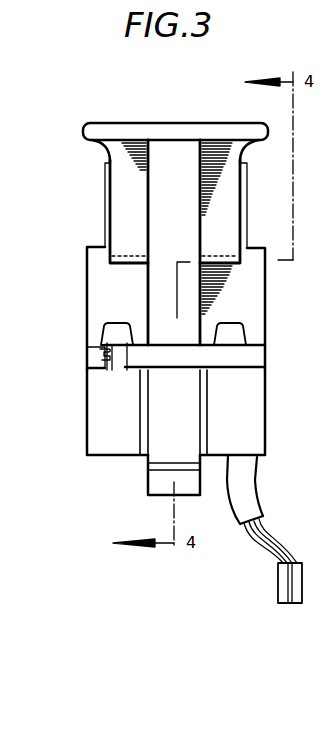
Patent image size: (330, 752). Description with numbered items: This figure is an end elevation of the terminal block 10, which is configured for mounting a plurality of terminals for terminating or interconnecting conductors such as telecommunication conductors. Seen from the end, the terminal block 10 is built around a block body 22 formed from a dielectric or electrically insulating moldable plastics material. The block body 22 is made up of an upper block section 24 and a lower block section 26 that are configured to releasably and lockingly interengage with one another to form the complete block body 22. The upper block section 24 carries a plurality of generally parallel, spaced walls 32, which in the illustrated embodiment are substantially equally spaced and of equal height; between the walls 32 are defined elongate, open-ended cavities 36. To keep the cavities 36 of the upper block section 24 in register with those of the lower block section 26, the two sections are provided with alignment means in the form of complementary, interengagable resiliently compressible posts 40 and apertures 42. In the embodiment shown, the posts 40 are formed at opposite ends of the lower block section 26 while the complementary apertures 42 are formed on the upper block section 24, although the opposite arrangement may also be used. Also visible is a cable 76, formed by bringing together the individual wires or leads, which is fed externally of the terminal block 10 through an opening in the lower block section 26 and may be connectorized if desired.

The terminal block 10 is at (110, 469).
The block body 22 is at (86, 323).
The upper block section 24 is at (90, 258).
The lower block section 26 is at (88, 413).
The walls 32 is at (110, 192).
The cavities 36 is at (6, 397).
The resiliently compressible posts 40 is at (114, 322).
The apertures 42 is at (100, 351).
The cable 76 is at (247, 498).